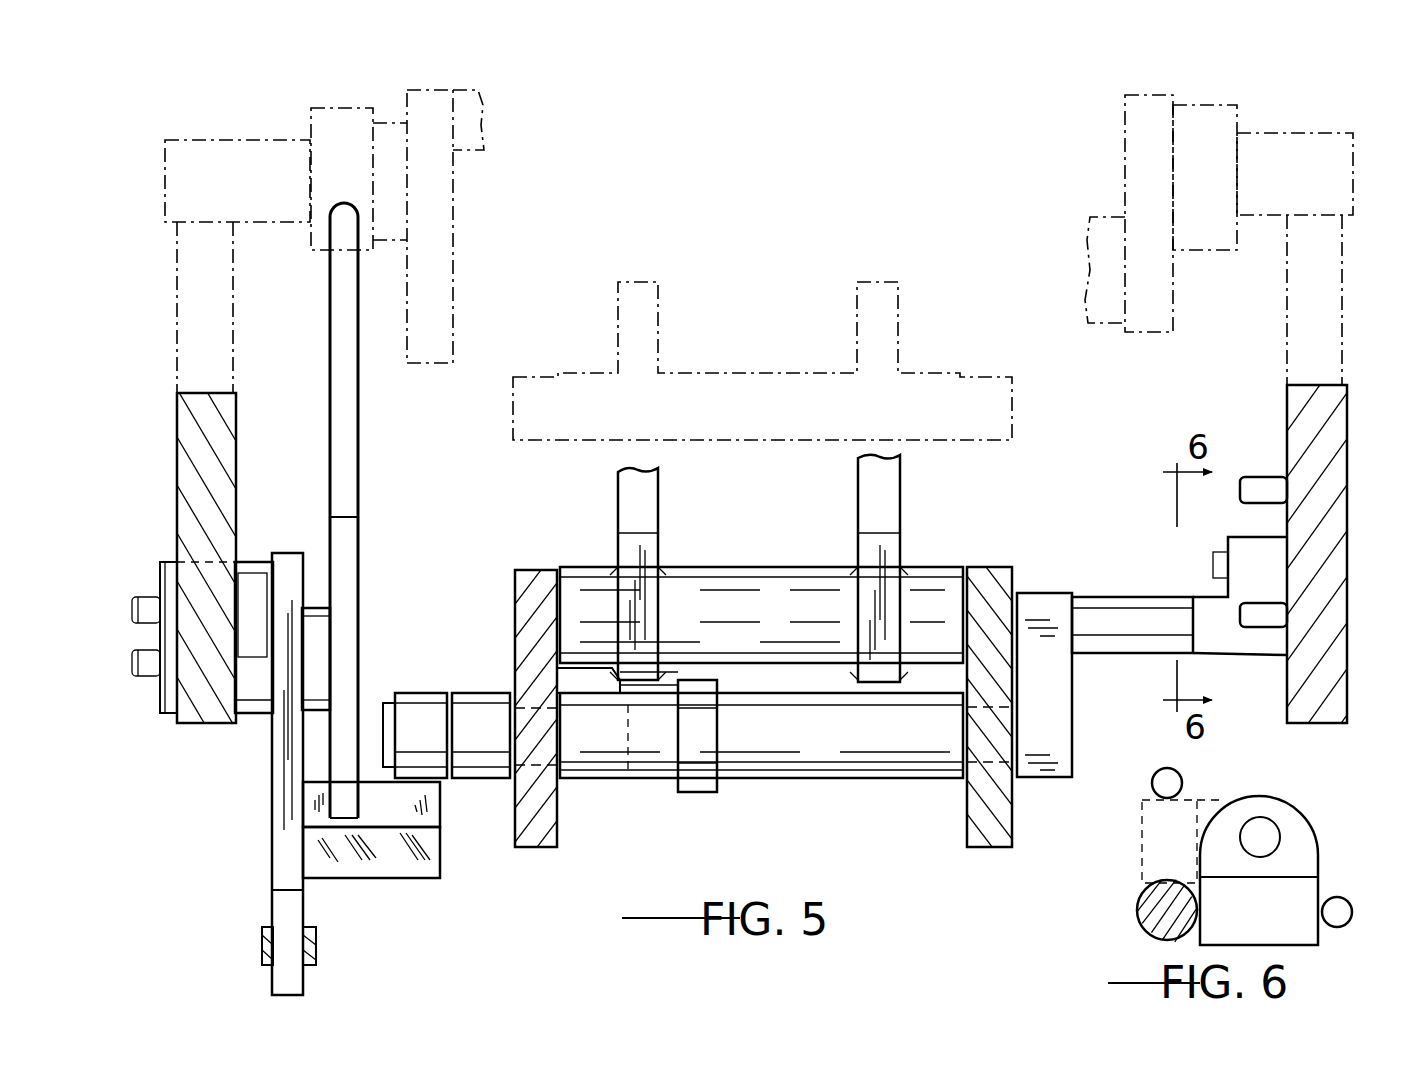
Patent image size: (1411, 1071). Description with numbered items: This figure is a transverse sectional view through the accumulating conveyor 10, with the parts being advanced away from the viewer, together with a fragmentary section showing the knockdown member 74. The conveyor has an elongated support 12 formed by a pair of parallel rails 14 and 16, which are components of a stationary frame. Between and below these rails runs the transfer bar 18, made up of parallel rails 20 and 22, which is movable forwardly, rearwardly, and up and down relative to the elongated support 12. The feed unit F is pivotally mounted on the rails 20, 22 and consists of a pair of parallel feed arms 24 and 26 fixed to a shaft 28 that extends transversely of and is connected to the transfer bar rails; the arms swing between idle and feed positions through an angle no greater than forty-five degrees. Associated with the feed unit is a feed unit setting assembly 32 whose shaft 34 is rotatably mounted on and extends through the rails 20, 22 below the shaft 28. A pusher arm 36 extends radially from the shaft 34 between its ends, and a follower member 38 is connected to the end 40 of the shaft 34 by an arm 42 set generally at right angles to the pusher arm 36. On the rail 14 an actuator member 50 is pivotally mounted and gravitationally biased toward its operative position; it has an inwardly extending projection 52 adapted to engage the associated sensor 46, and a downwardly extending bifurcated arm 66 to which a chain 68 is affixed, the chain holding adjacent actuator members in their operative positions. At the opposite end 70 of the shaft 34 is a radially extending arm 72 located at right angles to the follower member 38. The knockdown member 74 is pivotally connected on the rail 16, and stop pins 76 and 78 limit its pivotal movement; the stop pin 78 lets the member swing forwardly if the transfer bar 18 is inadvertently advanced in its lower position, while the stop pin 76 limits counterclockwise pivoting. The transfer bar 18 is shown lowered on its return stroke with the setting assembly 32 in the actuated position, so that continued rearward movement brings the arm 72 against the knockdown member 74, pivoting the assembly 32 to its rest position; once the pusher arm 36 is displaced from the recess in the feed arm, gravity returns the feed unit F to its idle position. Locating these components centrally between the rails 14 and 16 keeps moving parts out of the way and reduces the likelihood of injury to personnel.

In FIG. 5, the accumulating conveyor 10 is at (150, 822).
In FIG. 5, the elongated support 12 is at (172, 466).
In FIG. 5, the rail 14 is at (177, 510).
In FIG. 5, the rail 16 is at (1348, 418).
In FIG. 5, the transfer bar 18 is at (533, 852).
In FIG. 5, the rail 20 is at (553, 848).
In FIG. 5, the rail 22 is at (980, 850).
In FIG. 5, the feed arm 24 is at (658, 500).
In FIG. 5, the feed arm 26 is at (858, 488).
In FIG. 5, the shaft 28 is at (730, 567).
In FIG. 5, the feed unit setting assembly 32 is at (774, 788).
In FIG. 5, the shaft 34 is at (845, 780).
In FIG. 5, the pusher arm 36 is at (705, 678).
In FIG. 5, the follower member 38 is at (410, 693).
In FIG. 5, the end of shaft 40 is at (497, 785).
In FIG. 5, the arm 42 is at (465, 693).
In FIG. 5, the sensor 46 is at (358, 407).
In FIG. 5, the actuator member 50 is at (273, 820).
In FIG. 5, the projection 52 is at (375, 880).
In FIG. 5, the bifurcated arm 66 is at (273, 978).
In FIG. 5, the chain 68 is at (316, 945).
In FIG. 5, the end of rod 70 is at (1043, 792).
In FIG. 5, the arm 72 is at (1110, 597).
In FIG. 6, the arm 72 is at (1140, 912).
In FIG. 5, the knockdown member 74 is at (1205, 668).
In FIG. 6, the knockdown member 74 is at (1320, 855).
In FIG. 5, the stop pin 76 is at (1265, 603).
In FIG. 6, the stop pin 76 is at (1345, 898).
In FIG. 5, the stop pin 78 is at (1258, 477).
In FIG. 6, the stop pin 78 is at (1182, 775).
In FIG. 5, the feed unit F is at (928, 518).